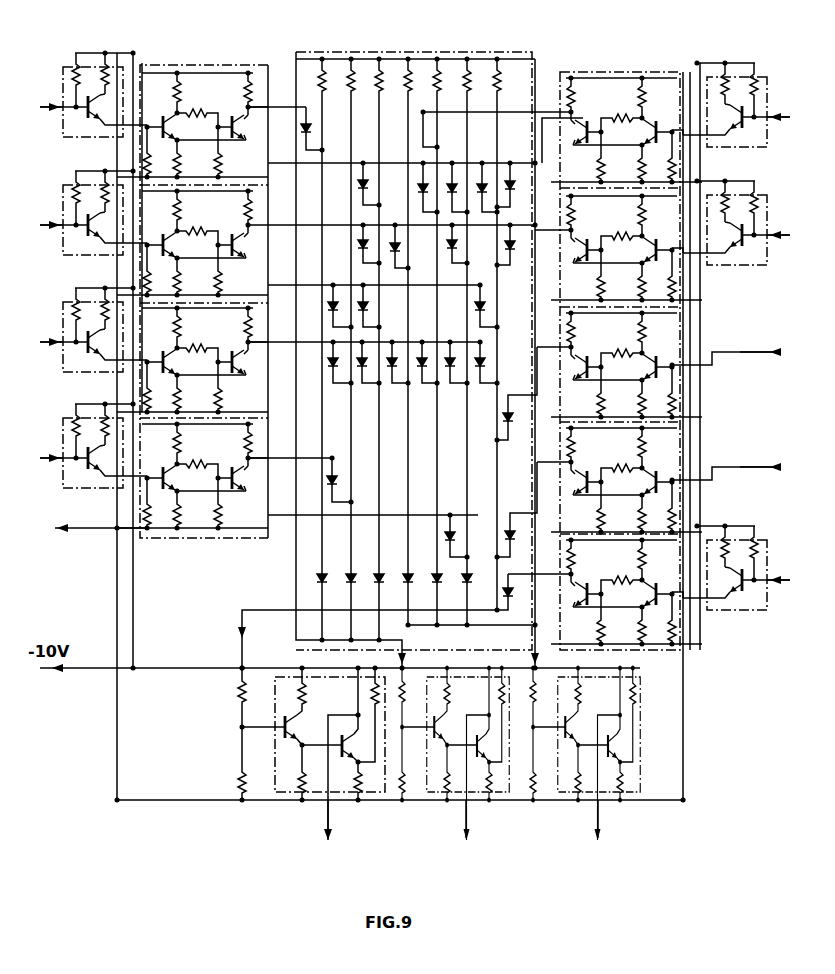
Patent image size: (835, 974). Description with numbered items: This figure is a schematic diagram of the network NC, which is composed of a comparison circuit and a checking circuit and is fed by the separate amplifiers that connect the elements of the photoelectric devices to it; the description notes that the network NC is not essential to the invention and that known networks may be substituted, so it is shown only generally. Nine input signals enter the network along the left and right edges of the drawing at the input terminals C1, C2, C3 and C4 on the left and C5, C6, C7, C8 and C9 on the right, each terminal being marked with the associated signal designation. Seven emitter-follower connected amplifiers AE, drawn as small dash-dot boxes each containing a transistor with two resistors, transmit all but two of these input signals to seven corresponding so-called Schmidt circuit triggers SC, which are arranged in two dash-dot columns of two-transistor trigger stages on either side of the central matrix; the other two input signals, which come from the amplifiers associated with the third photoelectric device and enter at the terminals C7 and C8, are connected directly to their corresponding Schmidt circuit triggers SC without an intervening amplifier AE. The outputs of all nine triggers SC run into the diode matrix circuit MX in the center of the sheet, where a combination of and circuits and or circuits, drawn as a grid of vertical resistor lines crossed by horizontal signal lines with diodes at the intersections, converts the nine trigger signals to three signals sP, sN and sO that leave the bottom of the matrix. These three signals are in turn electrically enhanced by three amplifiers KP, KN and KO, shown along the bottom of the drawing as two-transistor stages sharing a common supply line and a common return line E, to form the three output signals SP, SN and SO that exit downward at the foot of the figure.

The emitter-follower connected amplifier AE is at (63, 67).
The Schmidt circuit trigger SC is at (255, 48).
The diode matrix circuit MX is at (335, 54).
The network NC is at (766, 54).
The amplifier KO is at (286, 803).
The amplifier KP is at (450, 803).
The amplifier KN is at (548, 803).
The signal sO is at (367, 639).
The signal sP is at (362, 361).
The signal sN is at (547, 365).
The output signal SO is at (324, 832).
The output signal SP is at (454, 833).
The output signal SN is at (587, 834).
The ground terminal E is at (92, 519).
The input terminal C1/P1 C1 is at (46, 109).
The input terminal C2/N1 C2 is at (46, 227).
The input terminal C3/O1 C3 is at (46, 344).
The input terminal C4/P2 C4 is at (46, 460).
The input terminal N2/ C5 is at (786, 119).
The input terminal O2/ C6 is at (782, 236).
The input terminal P3/ C7 is at (753, 352).
The input terminal N3/ C8 is at (753, 467).
The input terminal O3/ C9 is at (783, 583).